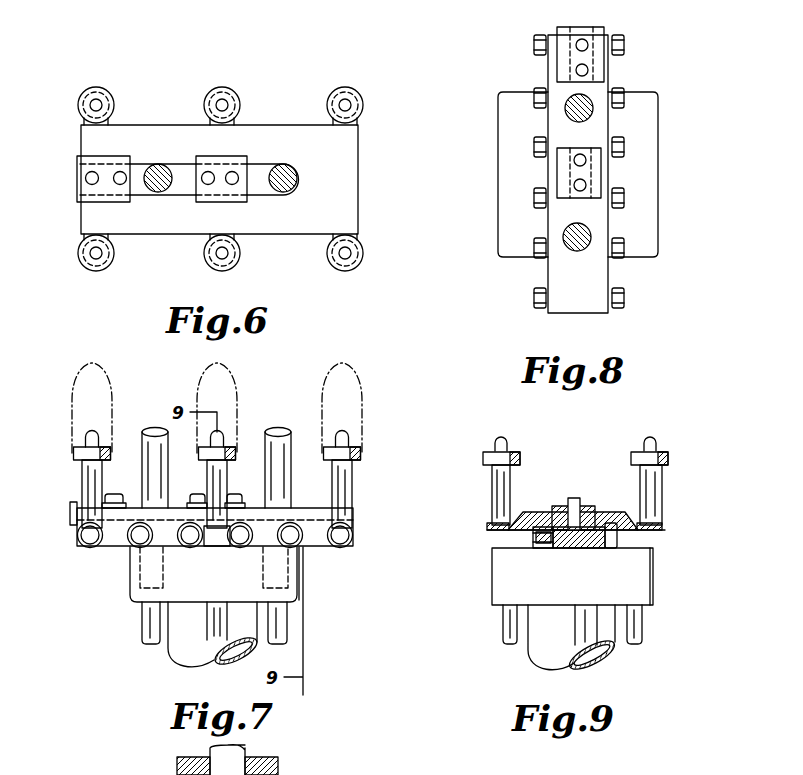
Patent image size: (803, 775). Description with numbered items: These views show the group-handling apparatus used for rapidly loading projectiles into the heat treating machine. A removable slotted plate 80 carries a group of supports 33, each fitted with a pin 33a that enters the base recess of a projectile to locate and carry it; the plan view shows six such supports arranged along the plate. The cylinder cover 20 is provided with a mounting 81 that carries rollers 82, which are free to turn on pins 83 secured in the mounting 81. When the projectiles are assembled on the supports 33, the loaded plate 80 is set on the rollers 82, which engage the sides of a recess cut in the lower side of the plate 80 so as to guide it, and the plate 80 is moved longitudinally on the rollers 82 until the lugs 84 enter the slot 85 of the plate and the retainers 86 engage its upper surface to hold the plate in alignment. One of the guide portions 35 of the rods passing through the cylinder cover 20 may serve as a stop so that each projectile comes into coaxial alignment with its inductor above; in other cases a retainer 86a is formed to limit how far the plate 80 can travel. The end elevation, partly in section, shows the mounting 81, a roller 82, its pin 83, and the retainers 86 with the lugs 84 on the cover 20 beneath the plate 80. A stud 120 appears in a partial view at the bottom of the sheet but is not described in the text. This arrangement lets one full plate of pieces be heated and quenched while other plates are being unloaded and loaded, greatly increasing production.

In FIG. 8, the cylinder cover 20 is at (656, 202).
In FIG. 7, the cylinder cover 20 is at (295, 597).
In FIG. 9, the cylinder cover 20 is at (645, 573).
In FIG. 6, the supports 33 is at (354, 98).
In FIG. 7, the supports 33 is at (351, 481).
In FIG. 9, the supports 33 is at (655, 491).
In FIG. 9, the pins 33a is at (653, 448).
In FIG. 6, the guide portions 35 is at (290, 176).
In FIG. 8, the guide portions 35 is at (576, 251).
In FIG. 7, the guide portions 35 is at (291, 446).
In FIG. 6, the removable slotted plate 80 is at (355, 196).
In FIG. 7, the removable slotted plate 80 is at (215, 527).
In FIG. 9, the removable slotted plate 80 is at (620, 512).
In FIG. 8, the mounting 81 is at (548, 273).
In FIG. 9, the mounting 81 is at (583, 548).
In FIG. 8, the rollers 82 is at (539, 202).
In FIG. 7, the rollers 82 is at (352, 542).
In FIG. 9, the rollers 82 is at (617, 540).
In FIG. 9, the pins 83 is at (535, 540).
In FIG. 9, the lugs 84 is at (565, 521).
In FIG. 6, the slot 85 is at (259, 168).
In FIG. 6, the retainers 86 is at (201, 160).
In FIG. 8, the retainers 86 is at (600, 172).
In FIG. 9, the retainers 86 is at (584, 506).
In FIG. 6, the retainer 86a is at (98, 158).
In FIG. 8, the retainer 86a is at (604, 63).
In FIG. 7, the retainer 86a is at (72, 518).
In FIG. 7, the stud 120 is at (212, 752).